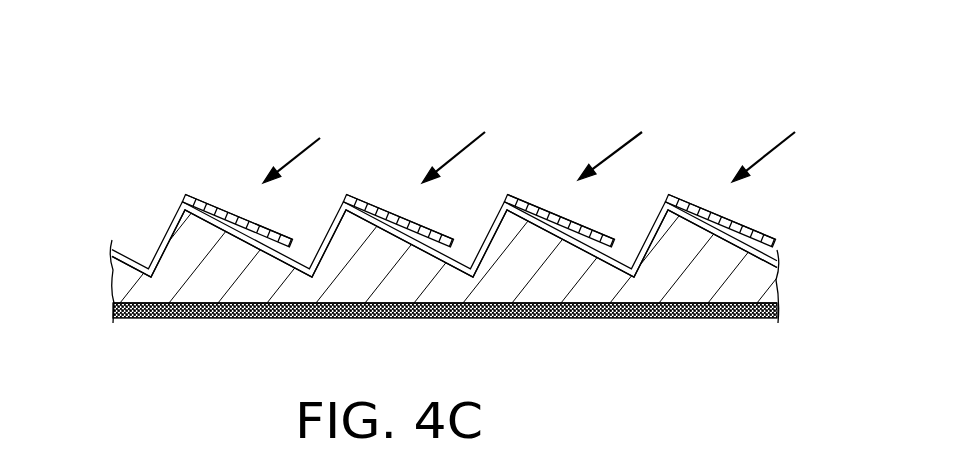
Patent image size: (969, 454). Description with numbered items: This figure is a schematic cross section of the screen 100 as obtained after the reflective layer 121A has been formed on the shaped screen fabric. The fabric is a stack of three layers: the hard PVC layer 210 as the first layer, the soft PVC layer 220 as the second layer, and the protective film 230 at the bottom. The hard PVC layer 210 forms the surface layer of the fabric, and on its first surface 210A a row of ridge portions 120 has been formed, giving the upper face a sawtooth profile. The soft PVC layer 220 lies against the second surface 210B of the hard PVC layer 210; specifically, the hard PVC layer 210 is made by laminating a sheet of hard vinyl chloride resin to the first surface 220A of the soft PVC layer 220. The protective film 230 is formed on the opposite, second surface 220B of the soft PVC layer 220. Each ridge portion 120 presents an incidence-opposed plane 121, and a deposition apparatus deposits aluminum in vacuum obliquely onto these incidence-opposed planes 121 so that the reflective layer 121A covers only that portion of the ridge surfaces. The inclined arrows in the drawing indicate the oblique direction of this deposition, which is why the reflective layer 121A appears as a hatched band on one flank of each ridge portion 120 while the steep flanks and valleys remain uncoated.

The screen 100 is at (137, 157).
The ridge portions 120 is at (173, 188).
The incidence-opposed planes 121 is at (263, 227).
The reflective layer 121A is at (227, 208).
The hard PVC layer 210 is at (777, 250).
The first surface of the hard PVC layer 210A is at (637, 236).
The second surface of the hard PVC layer 210B is at (683, 222).
The soft PVC layer 220 is at (772, 278).
The first surface of the soft PVC layer 220A is at (686, 250).
The second surface of the soft PVC layer 220B is at (580, 305).
The protective film 230 is at (780, 313).